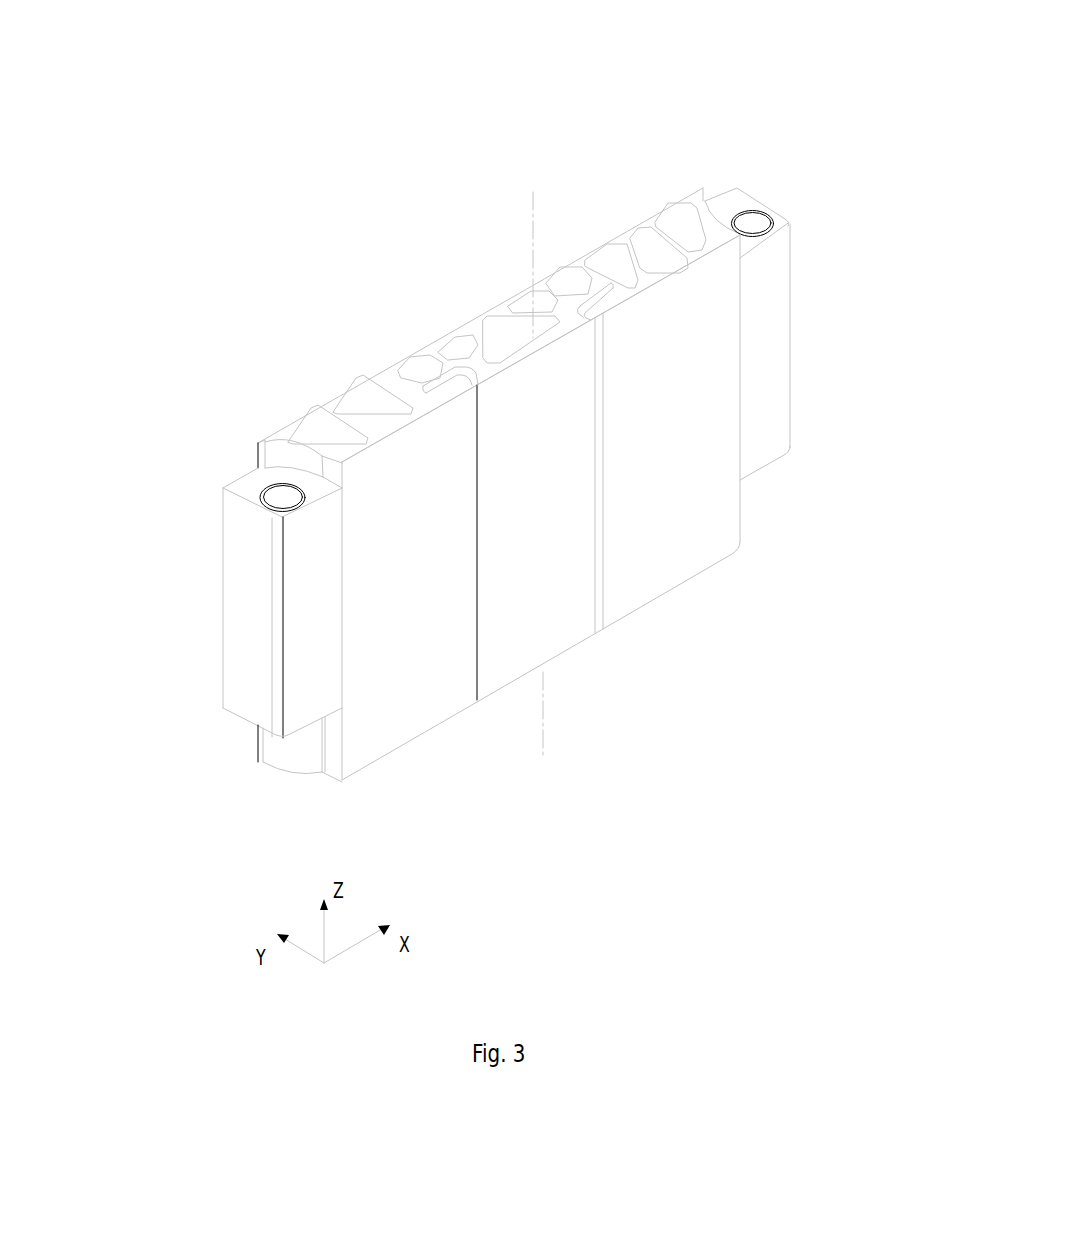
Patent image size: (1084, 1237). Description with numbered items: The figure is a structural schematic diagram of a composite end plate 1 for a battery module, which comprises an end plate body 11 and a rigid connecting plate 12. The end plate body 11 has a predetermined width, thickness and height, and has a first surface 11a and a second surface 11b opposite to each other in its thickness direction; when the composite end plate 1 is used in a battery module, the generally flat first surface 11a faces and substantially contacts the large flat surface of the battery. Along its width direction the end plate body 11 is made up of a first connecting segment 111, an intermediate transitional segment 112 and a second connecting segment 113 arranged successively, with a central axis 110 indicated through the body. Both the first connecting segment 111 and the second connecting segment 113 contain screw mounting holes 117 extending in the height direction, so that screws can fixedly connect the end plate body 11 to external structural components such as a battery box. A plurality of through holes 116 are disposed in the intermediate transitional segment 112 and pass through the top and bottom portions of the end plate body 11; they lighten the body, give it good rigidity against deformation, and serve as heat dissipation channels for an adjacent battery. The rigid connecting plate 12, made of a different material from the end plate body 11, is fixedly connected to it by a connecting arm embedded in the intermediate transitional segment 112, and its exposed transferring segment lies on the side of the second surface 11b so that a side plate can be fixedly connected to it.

The composite end plate 1 is at (477, 27).
The end plate body 11 is at (600, 190).
The first surface 11a is at (338, 386).
The second surface 11b is at (690, 556).
The central axis 110 is at (532, 200).
The first connecting segment 111 is at (240, 583).
The intermediate transitional segment 112 is at (477, 316).
The second connecting segment 113 is at (776, 326).
The through hole 116 is at (414, 370).
The mounting hole 117 is at (757, 223).
The rigid connecting plate 12 is at (558, 628).